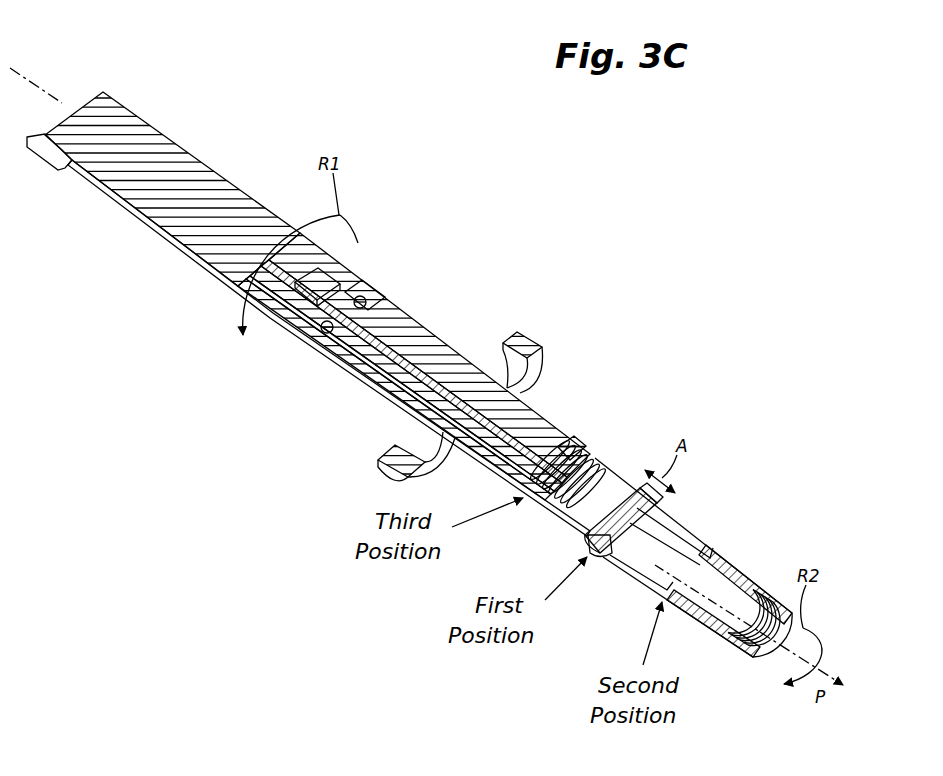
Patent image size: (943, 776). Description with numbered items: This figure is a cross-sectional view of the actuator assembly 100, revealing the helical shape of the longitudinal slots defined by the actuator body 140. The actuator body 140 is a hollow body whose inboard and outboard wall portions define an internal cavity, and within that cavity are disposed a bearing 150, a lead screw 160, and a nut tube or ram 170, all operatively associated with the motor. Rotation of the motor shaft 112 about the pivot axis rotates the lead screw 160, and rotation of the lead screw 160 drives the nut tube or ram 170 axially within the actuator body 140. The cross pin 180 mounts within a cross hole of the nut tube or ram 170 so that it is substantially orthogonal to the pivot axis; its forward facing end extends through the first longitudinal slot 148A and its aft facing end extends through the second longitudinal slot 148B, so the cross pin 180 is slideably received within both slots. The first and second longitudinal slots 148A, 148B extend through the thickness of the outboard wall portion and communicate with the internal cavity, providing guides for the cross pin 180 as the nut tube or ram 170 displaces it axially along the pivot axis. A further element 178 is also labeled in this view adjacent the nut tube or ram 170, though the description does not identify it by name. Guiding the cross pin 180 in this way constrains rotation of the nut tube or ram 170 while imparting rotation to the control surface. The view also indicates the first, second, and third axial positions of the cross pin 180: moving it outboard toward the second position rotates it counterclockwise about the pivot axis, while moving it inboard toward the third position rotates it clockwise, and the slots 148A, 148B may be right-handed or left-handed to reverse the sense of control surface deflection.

The actuator assembly 100 is at (552, 224).
The motor shaft 112 is at (317, 290).
The bearing 150 is at (372, 296).
The lead screw 160 is at (458, 397).
The actuator body 140 is at (540, 331).
The compression spring 178 is at (556, 453).
The nut tube or ram 170 is at (608, 503).
The cross pin 180 is at (593, 556).
The second longitudinal slot 148B is at (685, 540).
The first longitudinal slot 148A is at (657, 577).